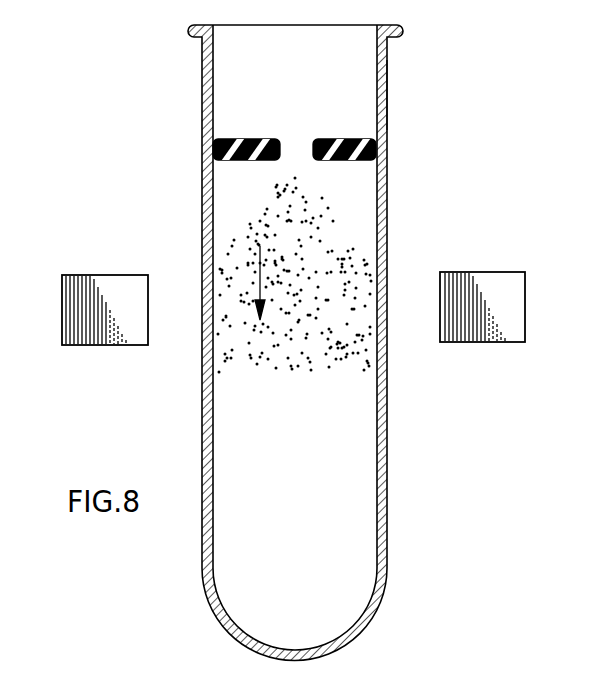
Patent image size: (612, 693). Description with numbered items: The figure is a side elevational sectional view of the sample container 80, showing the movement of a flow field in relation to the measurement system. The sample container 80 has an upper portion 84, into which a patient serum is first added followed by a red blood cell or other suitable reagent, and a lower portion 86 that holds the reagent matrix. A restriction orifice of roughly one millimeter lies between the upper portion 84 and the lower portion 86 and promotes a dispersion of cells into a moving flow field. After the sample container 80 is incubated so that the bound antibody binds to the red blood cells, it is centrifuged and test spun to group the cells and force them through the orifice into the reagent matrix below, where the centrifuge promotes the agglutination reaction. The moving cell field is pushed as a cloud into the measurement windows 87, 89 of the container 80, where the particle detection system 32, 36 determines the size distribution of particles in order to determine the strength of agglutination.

The sample container 80 is at (155, 155).
The upper portion 84 is at (386, 96).
The lower portion 86 is at (371, 416).
The measurement window 87 is at (203, 302).
The measurement window 89 is at (386, 307).
The particle detection system 32 is at (108, 343).
The particle detection system 36 is at (481, 340).